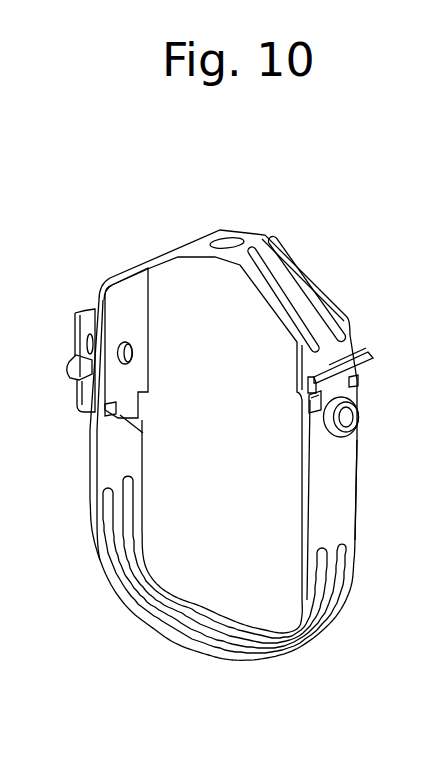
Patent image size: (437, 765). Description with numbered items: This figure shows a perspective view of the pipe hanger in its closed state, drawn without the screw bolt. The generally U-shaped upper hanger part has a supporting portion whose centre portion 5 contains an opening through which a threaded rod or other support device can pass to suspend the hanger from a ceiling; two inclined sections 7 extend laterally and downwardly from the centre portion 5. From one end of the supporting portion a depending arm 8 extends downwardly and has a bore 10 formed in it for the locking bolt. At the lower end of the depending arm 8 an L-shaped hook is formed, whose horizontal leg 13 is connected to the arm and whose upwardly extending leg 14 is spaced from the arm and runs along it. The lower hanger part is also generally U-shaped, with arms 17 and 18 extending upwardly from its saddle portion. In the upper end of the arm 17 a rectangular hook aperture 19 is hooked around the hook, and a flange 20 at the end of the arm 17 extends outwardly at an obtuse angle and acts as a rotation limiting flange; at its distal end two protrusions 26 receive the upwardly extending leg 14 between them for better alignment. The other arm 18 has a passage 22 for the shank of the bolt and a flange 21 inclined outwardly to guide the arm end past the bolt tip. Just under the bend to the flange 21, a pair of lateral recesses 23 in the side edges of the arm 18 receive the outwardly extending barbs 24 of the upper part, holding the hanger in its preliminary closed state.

The centre portion 5 is at (249, 238).
The inclined sections 7 is at (146, 268).
The depending arm 8 is at (124, 311).
The bore 10 is at (128, 356).
The horizontal leg 13 is at (112, 410).
The upwardly extending leg 14 is at (78, 318).
The arm 17 is at (103, 481).
The arm 18 is at (322, 497).
The hook aperture 19 is at (116, 417).
The flange 20 is at (76, 400).
The flange 21 is at (372, 350).
The passage 22 is at (351, 417).
The lateral recesses 23 is at (360, 388).
The barbs 24 is at (308, 395).
The protrusions 26 is at (72, 362).